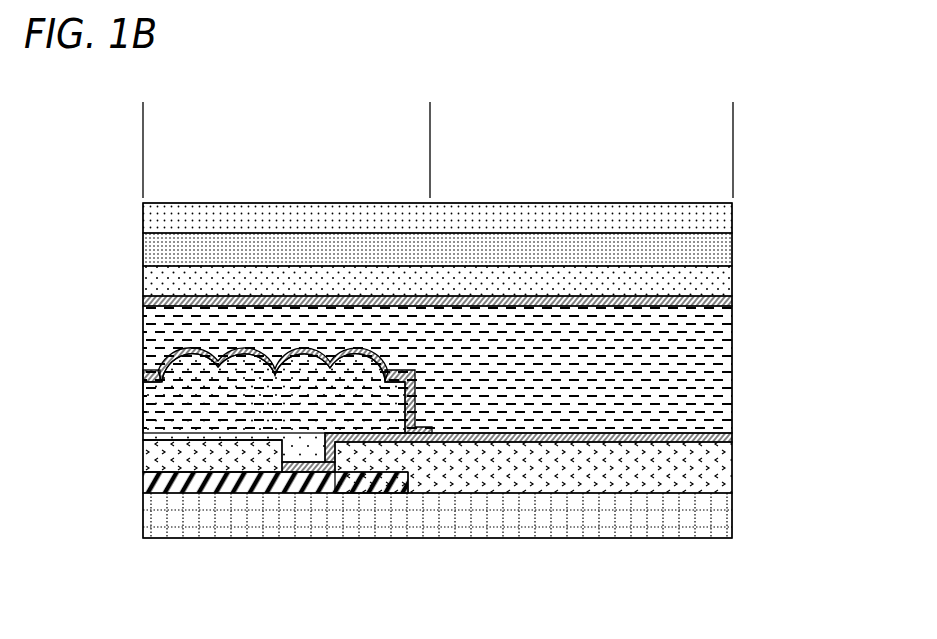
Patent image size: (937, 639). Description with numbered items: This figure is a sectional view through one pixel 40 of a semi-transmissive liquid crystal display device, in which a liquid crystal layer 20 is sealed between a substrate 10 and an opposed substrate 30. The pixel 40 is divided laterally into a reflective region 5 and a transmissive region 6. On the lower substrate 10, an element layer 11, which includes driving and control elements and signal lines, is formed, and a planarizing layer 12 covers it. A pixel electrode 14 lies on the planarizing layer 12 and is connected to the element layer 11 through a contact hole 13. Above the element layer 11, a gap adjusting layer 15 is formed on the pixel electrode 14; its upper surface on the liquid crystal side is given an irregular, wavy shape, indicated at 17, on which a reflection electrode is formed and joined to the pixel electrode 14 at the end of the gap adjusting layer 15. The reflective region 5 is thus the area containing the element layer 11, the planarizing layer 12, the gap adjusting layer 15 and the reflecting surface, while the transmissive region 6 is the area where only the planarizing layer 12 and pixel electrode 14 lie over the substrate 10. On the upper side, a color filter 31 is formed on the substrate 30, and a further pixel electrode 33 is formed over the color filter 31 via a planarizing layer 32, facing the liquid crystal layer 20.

The reflective region 5 is at (153, 112).
The transmissive region 6 is at (440, 112).
The substrate 10 is at (718, 518).
The element layer 11 is at (360, 483).
The planarizing layer 12 is at (710, 464).
The contact hole 13 is at (306, 449).
The pixel electrode 14 is at (712, 431).
The gap adjusting layer 15 is at (208, 420).
The lens surface 17 is at (178, 347).
The liquid crystal layer 20 is at (700, 354).
The substrate 30 is at (710, 228).
The color filter 31 is at (713, 250).
The planarizing layer 32 is at (713, 271).
The pixel electrode 33 is at (733, 302).
The pixel 40 is at (740, 196).